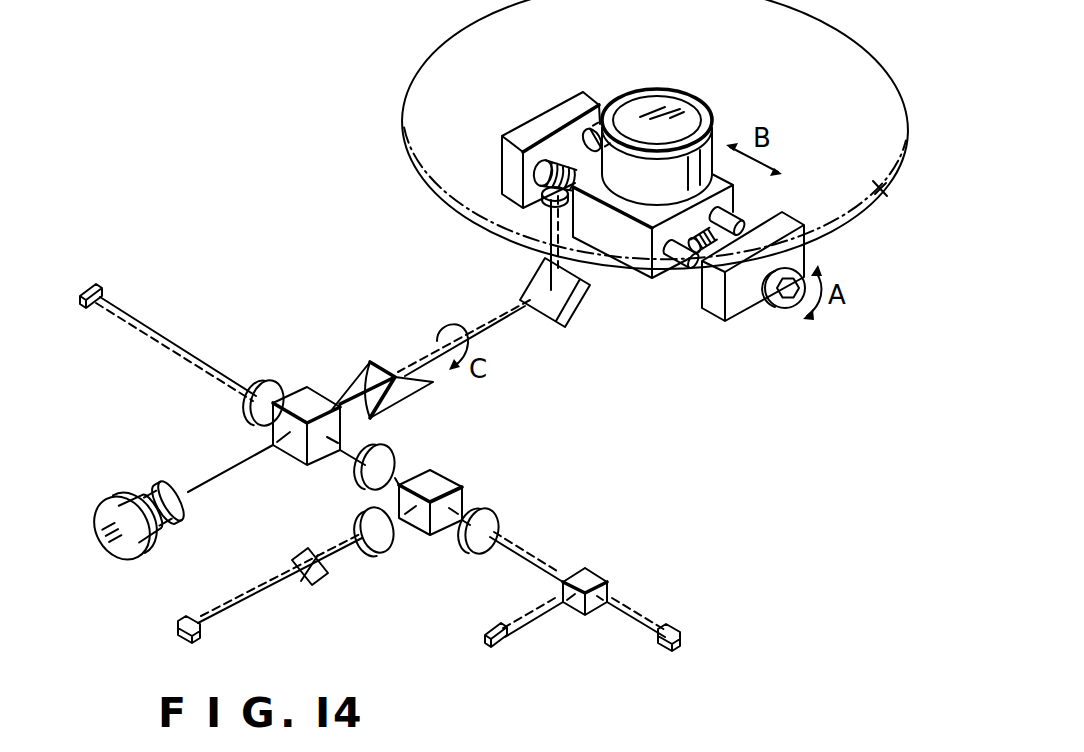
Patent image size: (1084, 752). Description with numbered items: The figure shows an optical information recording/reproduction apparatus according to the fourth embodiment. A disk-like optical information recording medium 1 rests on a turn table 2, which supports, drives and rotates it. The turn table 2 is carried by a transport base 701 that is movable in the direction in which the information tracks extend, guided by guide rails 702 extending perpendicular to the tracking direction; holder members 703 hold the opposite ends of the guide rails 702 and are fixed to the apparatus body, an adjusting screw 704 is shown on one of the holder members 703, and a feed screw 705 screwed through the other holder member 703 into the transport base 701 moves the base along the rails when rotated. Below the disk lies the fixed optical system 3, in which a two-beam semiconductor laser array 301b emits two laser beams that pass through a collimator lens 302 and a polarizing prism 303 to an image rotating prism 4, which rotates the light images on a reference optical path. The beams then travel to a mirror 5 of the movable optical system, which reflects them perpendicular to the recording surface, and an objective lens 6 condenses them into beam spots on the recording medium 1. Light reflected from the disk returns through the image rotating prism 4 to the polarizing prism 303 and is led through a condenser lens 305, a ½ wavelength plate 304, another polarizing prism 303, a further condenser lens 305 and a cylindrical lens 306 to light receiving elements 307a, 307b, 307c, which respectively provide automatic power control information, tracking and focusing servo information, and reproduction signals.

The disk-like optical information recording medium 1 is at (880, 197).
The turn table 2 is at (706, 112).
The fixed optical system 3 is at (308, 265).
The image rotating prism 4 is at (385, 352).
The mirror 5 is at (580, 308).
The objective lens 6 is at (549, 201).
The transport base 701 is at (730, 205).
The guide rails 702 is at (742, 218).
The holder members 703 is at (590, 96).
The adjusting screw 704 is at (551, 160).
The feed screw 705 is at (790, 308).
The two-beam semiconductor laser array 301b is at (141, 557).
The collimator lens 302 is at (186, 512).
The polarizing prism 303 is at (316, 395).
The ½ wavelength plate 304 is at (380, 470).
The condenser lens 305 is at (268, 382).
The cylindrical lens 306 is at (306, 586).
The light receiving element 307a is at (100, 291).
The light receiving element 307b is at (176, 634).
The light receiving element 307c is at (494, 630).